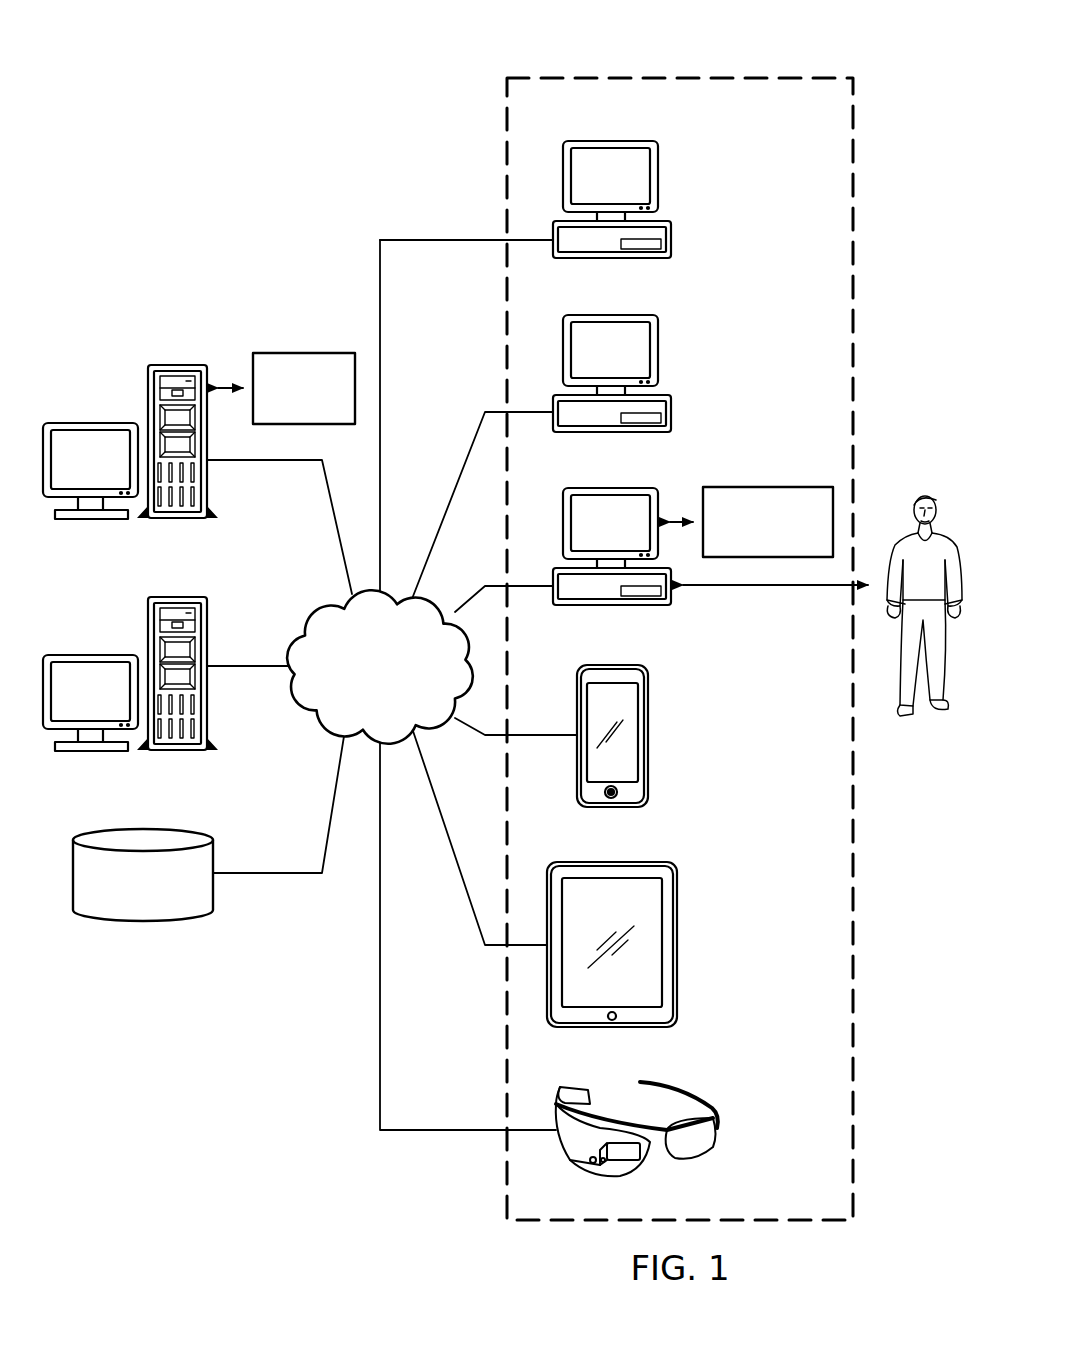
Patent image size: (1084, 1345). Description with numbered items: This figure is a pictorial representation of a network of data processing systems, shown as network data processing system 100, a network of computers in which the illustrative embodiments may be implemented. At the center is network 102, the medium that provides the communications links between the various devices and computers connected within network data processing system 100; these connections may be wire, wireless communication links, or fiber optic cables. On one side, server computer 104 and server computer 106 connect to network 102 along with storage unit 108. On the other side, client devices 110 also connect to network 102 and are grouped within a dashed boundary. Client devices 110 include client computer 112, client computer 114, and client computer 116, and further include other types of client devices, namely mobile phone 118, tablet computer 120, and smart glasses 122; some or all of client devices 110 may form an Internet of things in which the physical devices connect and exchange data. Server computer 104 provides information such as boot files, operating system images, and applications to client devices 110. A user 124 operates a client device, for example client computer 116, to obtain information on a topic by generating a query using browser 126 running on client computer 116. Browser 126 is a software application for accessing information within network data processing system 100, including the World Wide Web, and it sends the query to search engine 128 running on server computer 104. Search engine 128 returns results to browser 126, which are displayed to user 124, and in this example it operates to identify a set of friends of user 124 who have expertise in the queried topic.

The network data processing system 100 is at (228, 213).
The network 102 is at (357, 697).
The server computer 104 is at (90, 421).
The server computer 106 is at (90, 653).
The storage unit 108 is at (143, 922).
The client devices 110 is at (682, 76).
The client computer 112 is at (660, 175).
The client computer 114 is at (660, 349).
The client computer 116 is at (655, 604).
The mobile phone 118 is at (650, 748).
The tablet computer 120 is at (678, 956).
The smart glasses 122 is at (720, 1129).
The user 124 is at (925, 496).
The browser 126 is at (767, 486).
The search engine 128 is at (306, 352).